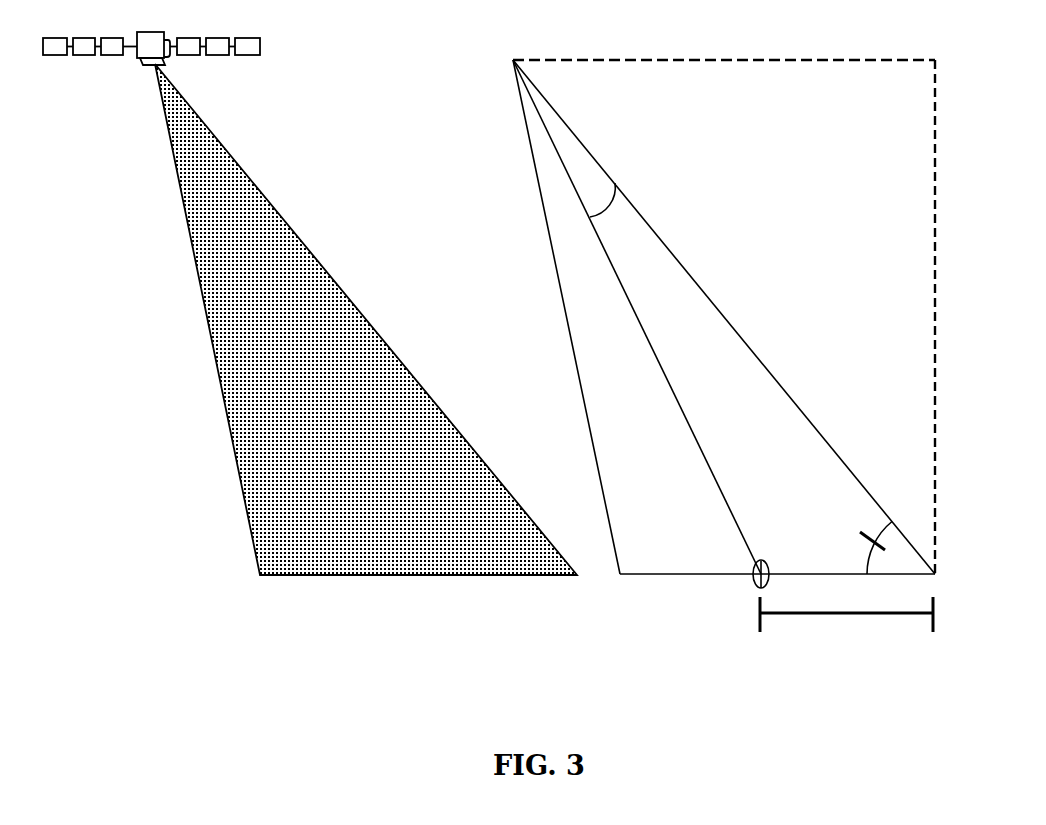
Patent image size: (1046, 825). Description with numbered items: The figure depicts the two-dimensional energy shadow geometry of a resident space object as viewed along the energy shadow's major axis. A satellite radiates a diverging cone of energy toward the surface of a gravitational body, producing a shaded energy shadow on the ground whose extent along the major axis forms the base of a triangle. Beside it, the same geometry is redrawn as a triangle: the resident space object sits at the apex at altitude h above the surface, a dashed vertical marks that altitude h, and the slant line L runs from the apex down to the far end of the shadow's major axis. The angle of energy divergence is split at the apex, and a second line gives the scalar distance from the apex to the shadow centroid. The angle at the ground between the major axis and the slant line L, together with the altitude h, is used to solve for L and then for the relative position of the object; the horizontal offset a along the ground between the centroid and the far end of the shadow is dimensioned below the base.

The slant distance L is at (724, 317).
The altitude h is at (947, 317).
The ground distance a is at (846, 620).